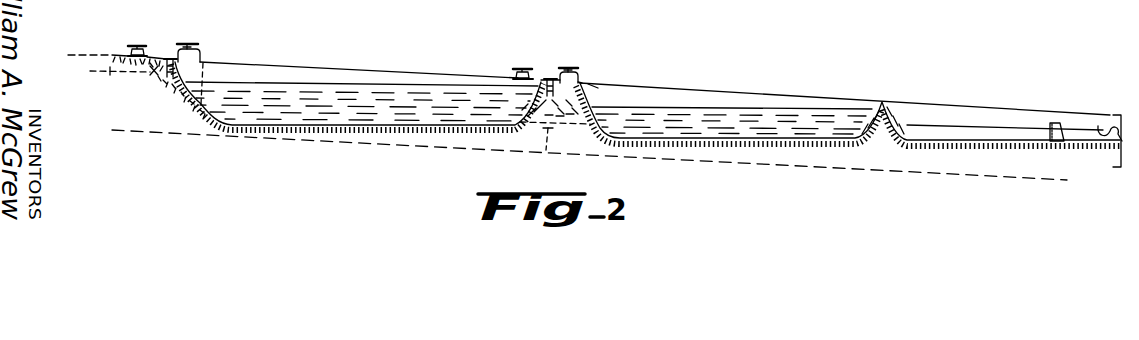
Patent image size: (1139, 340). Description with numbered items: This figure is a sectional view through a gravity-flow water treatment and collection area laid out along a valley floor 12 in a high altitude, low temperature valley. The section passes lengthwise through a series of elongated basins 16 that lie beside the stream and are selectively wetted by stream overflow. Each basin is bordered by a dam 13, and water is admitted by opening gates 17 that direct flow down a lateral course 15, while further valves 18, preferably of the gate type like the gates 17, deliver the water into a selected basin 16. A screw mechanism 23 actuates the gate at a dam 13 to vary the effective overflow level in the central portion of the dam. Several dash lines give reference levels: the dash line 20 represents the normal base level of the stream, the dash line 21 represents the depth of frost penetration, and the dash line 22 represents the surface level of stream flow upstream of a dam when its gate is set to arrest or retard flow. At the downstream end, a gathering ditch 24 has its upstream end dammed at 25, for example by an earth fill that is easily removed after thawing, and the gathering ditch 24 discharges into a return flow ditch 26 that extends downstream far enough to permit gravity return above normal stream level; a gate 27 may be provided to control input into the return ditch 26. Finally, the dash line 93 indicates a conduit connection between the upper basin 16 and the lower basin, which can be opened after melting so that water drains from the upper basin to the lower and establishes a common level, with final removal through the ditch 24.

The valley floor 12 is at (731, 88).
The dam 13 is at (201, 51).
The lateral course 15 is at (155, 73).
The basin 16 is at (378, 112).
The gate 17 is at (137, 45).
The valve 18 is at (169, 60).
The dash line 20 is at (112, 72).
The dash line 21 is at (327, 143).
The dash line 22 is at (76, 55).
The screw mechanism 23 is at (188, 43).
The gathering ditch 24 is at (982, 130).
The dam 25 is at (897, 107).
The return flow ditch 26 is at (1108, 127).
The gate 27 is at (1071, 143).
The conduit 93 is at (542, 152).